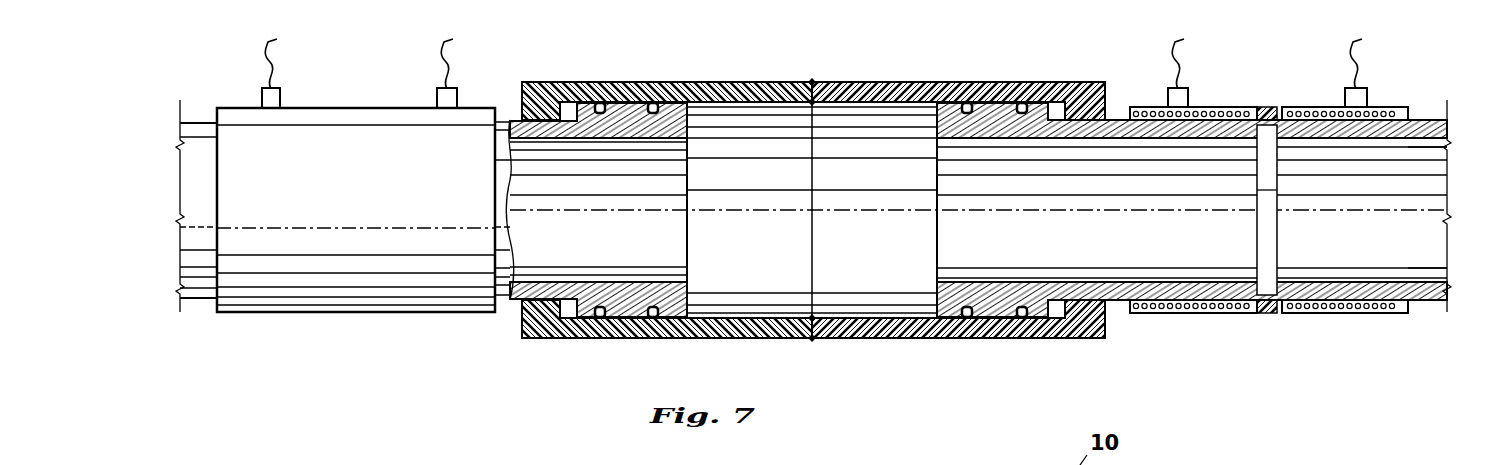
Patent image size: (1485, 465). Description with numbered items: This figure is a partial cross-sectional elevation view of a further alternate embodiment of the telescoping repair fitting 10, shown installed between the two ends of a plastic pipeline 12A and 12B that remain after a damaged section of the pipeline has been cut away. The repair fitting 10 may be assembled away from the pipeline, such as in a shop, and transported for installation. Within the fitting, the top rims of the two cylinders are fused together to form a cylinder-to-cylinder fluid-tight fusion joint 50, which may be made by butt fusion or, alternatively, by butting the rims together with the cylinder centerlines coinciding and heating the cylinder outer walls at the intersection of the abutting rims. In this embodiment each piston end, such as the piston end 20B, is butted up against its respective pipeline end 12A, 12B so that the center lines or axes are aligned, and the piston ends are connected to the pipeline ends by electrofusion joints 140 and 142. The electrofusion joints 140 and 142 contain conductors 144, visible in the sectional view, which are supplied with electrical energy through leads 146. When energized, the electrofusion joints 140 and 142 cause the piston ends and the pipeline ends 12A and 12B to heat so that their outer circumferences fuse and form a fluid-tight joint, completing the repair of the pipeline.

The telescoping repair fitting 10 is at (975, 68).
The pipeline end 12A is at (197, 282).
The pipeline end 12B is at (1435, 298).
The piston end 20B is at (1118, 298).
The cylinder-to-cylinder fluid-tight fusion joint 50 is at (812, 80).
The electrofusion joint 140 is at (325, 118).
The electrofusion joint 142 is at (1215, 108).
The conductors 144 is at (1380, 108).
The leads 146 is at (270, 62).